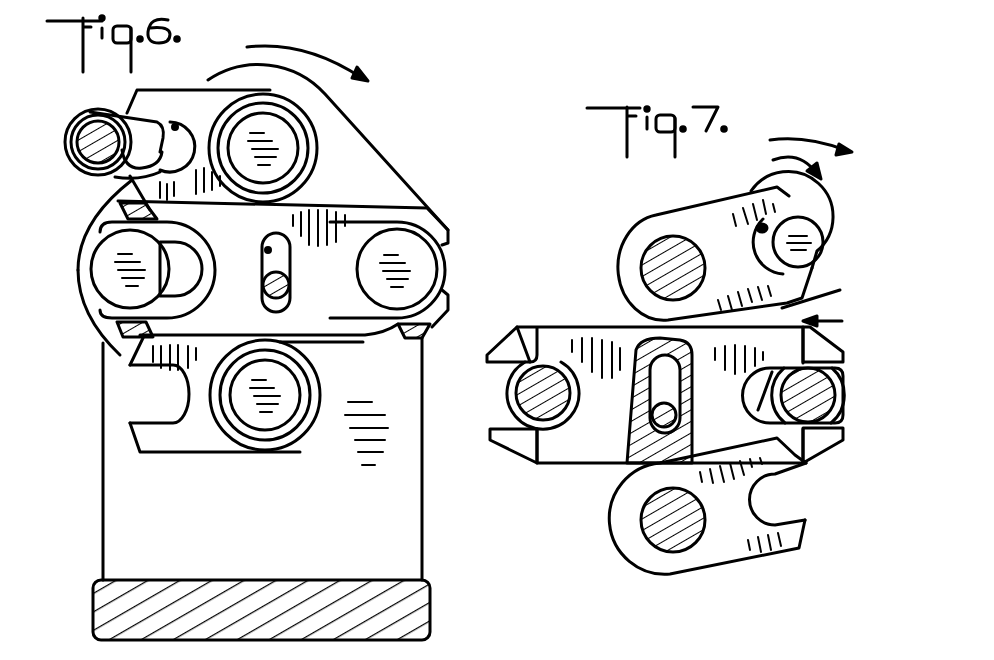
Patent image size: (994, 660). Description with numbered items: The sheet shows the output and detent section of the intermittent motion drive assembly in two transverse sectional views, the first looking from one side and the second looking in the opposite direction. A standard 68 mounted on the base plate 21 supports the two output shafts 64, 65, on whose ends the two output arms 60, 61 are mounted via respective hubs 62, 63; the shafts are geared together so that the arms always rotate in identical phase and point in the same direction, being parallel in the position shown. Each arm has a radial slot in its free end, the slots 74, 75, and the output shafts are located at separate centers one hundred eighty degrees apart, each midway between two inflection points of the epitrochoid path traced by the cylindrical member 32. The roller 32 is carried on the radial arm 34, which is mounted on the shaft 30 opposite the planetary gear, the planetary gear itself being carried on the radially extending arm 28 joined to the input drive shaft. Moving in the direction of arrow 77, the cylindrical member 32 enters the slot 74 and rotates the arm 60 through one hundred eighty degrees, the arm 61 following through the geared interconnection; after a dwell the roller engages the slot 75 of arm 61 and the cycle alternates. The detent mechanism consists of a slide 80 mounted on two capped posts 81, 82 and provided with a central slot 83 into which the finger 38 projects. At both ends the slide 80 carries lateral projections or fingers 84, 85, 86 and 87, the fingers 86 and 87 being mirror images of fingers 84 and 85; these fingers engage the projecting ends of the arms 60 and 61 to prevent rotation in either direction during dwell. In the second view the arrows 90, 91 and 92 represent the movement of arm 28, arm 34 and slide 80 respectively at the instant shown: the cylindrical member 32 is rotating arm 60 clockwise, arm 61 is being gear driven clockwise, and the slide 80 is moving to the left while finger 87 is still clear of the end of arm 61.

In FIG. 6, the base plate 21 is at (411, 1).
In FIG. 7, the radially extending arm 28 is at (826, 296).
In FIG. 6, the shaft 30 is at (85, 128).
In FIG. 6, the cylindrical member 32 is at (110, 182).
In FIG. 7, the cylindrical member 32 is at (805, 226).
In FIG. 6, the radial arm 34 is at (111, 110).
In FIG. 7, the radial arm 34 is at (830, 262).
In FIG. 6, the finger 38 is at (262, 290).
In FIG. 7, the finger 38 is at (672, 416).
In FIG. 6, the arm 60 is at (203, 97).
In FIG. 7, the arm 60 is at (696, 212).
In FIG. 6, the arm 61 is at (195, 445).
In FIG. 7, the arm 61 is at (746, 555).
In FIG. 6, the hub 62 is at (300, 128).
In FIG. 6, the hub 63 is at (295, 427).
In FIG. 6, the output shaft 64 is at (283, 163).
In FIG. 7, the output shaft 64 is at (657, 253).
In FIG. 6, the output shaft 65 is at (259, 423).
In FIG. 7, the output shaft 65 is at (645, 520).
In FIG. 6, the standard 68 is at (393, 518).
In FIG. 6, the slot 74 is at (178, 122).
In FIG. 7, the slot 74 is at (756, 226).
In FIG. 6, the slot 75 is at (126, 420).
In FIG. 7, the slot 75 is at (793, 513).
In FIG. 6, the arrow 77 is at (307, 52).
In FIG. 6, the slide 80 is at (328, 322).
In FIG. 7, the slide 80 is at (587, 330).
In FIG. 6, the capped post 81 is at (108, 286).
In FIG. 7, the capped post 81 is at (825, 403).
In FIG. 6, the capped post 82 is at (422, 270).
In FIG. 7, the capped post 82 is at (520, 393).
In FIG. 6, the central slot 83 is at (265, 248).
In FIG. 7, the central slot 83 is at (659, 400).
In FIG. 7, the finger 84 is at (525, 333).
In FIG. 6, the finger 85 is at (408, 339).
In FIG. 7, the finger 85 is at (523, 458).
In FIG. 6, the finger 86 is at (122, 212).
In FIG. 7, the finger 86 is at (831, 352).
In FIG. 6, the finger 87 is at (112, 339).
In FIG. 7, the finger 87 is at (820, 445).
In FIG. 7, the arrow 90 is at (806, 144).
In FIG. 7, the arrow 91 is at (828, 176).
In FIG. 7, the arrow 92 is at (842, 321).